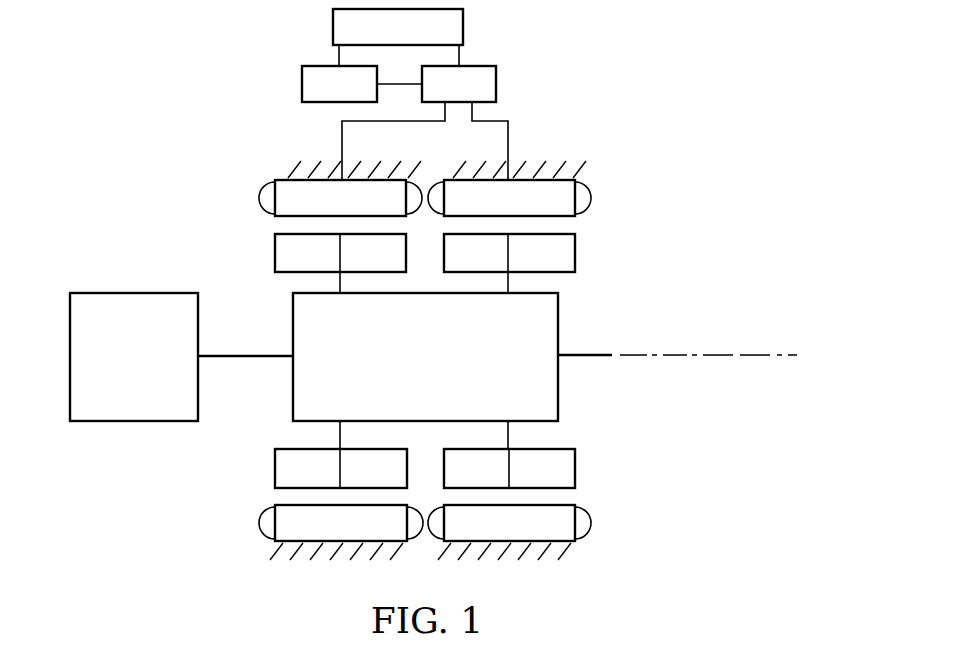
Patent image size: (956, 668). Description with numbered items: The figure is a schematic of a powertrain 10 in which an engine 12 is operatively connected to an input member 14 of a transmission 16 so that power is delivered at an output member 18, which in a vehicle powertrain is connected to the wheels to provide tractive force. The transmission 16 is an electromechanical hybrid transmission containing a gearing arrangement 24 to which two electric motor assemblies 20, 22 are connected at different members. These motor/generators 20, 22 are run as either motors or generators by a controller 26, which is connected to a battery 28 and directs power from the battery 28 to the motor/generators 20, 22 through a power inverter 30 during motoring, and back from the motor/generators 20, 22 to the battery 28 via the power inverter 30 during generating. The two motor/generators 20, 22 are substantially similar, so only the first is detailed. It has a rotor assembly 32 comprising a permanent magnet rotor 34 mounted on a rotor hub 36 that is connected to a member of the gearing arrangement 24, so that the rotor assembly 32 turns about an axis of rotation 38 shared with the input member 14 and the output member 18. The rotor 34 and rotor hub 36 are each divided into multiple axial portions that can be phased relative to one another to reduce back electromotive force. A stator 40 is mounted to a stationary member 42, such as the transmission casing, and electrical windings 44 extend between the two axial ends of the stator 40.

The powertrain 10 is at (620, 68).
The engine 12 is at (121, 356).
The input member 14 is at (269, 358).
The transmission 16 is at (600, 248).
The output member 18 is at (585, 355).
The electric motor assembly 20 is at (381, 154).
The electric motor assembly 22 is at (602, 168).
The gearing arrangement 24 is at (413, 366).
The controller 26 is at (327, 95).
The battery 28 is at (386, 38).
The power inverter 30 is at (447, 95).
The rotor assembly 32 is at (295, 241).
The rotor 34 is at (275, 252).
The rotor hub 36 is at (335, 281).
The axis of rotation 38 is at (737, 355).
The stator 40 is at (324, 209).
The stationary member 42 is at (308, 168).
The electrical windings 44 is at (268, 185).